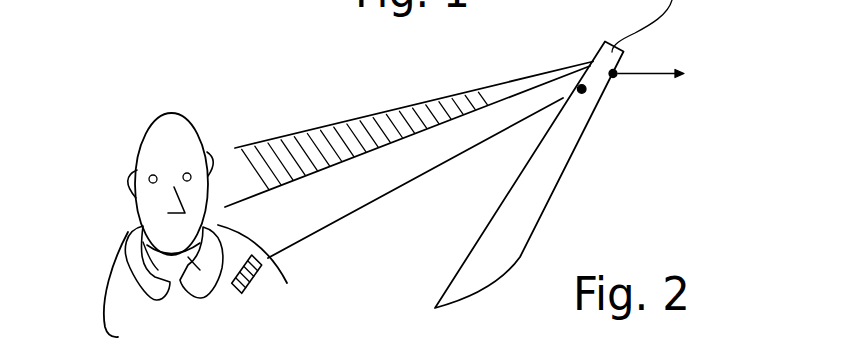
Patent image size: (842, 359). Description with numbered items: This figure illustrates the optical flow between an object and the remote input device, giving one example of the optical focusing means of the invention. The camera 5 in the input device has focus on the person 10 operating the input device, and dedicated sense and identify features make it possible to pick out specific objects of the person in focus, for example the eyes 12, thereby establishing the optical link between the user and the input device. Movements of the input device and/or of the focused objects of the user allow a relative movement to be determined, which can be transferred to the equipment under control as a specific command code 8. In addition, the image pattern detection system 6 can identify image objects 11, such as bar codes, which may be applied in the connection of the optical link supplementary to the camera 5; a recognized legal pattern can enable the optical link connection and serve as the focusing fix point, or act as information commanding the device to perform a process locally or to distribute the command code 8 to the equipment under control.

The camera 5 is at (592, 58).
The image pattern detection system 6 is at (587, 105).
The specific command code 8 is at (662, 77).
The person 10 is at (147, 133).
The image objects 11 is at (272, 275).
The eyes 12 is at (218, 157).